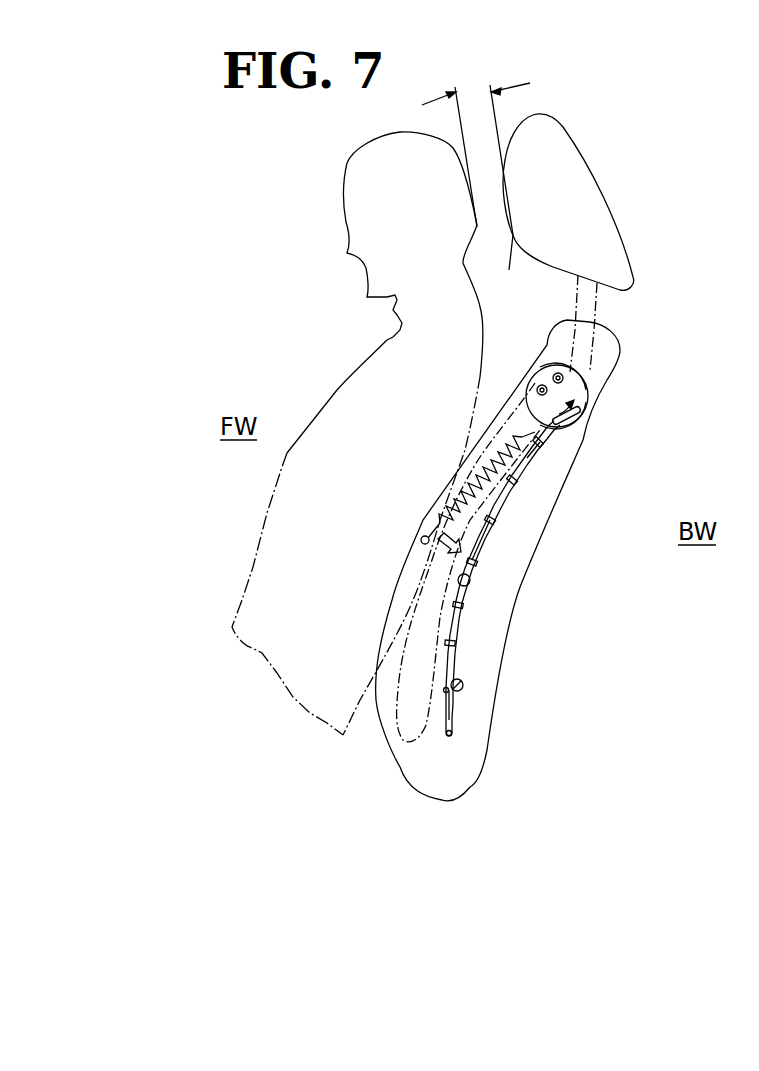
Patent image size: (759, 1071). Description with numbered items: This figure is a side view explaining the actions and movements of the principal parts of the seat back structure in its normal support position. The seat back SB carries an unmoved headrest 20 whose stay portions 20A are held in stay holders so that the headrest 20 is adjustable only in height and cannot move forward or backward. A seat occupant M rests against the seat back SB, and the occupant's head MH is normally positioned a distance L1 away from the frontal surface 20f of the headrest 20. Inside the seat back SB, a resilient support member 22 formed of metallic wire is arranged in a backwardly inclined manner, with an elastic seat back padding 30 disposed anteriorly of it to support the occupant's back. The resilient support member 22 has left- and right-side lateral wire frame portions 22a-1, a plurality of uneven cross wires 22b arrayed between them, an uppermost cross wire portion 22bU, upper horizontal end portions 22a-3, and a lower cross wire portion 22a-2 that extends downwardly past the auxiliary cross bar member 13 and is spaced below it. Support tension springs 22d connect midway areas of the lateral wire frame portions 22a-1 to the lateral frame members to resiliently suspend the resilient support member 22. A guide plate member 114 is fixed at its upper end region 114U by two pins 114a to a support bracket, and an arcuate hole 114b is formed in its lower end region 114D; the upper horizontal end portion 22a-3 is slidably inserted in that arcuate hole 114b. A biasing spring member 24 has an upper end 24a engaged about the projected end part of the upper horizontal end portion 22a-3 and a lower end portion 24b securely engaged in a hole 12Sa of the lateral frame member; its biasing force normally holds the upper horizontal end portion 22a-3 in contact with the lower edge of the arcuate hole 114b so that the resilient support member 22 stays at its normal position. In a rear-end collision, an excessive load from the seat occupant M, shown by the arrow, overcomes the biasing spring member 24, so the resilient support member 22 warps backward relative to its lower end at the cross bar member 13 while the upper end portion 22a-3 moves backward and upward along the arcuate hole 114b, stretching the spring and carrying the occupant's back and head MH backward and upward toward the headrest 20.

The auxiliary cross bar member 13 is at (463, 688).
The headrest 20 is at (577, 175).
The stay portions 20A is at (597, 307).
The frontal surface 20f is at (512, 197).
The resilient support member 22 is at (472, 637).
The lateral wire frame portions 22a-1 is at (484, 545).
The lower cross wire portion 22a-2 is at (453, 737).
The upper end portions 22a-3 is at (560, 428).
The cross wires 22b is at (513, 482).
The uppermost cross wire portion 22bU is at (540, 462).
The support tension springs 22d is at (470, 583).
The biasing spring member 24 is at (462, 472).
The spring upper end 24a is at (538, 440).
The lower end portion 24b is at (440, 525).
The seat back padding 30 is at (400, 733).
The guide plate member 114 is at (596, 395).
The upper end region 114U is at (585, 383).
The lower end region 114D is at (586, 410).
The pins 114a is at (556, 374).
The arcuate hole 114b is at (589, 425).
The hole 12Sa is at (421, 540).
The seat occupant M is at (332, 393).
The seat occupant's head MH is at (355, 158).
The seat back SB is at (505, 758).
The distance L1 is at (476, 147).